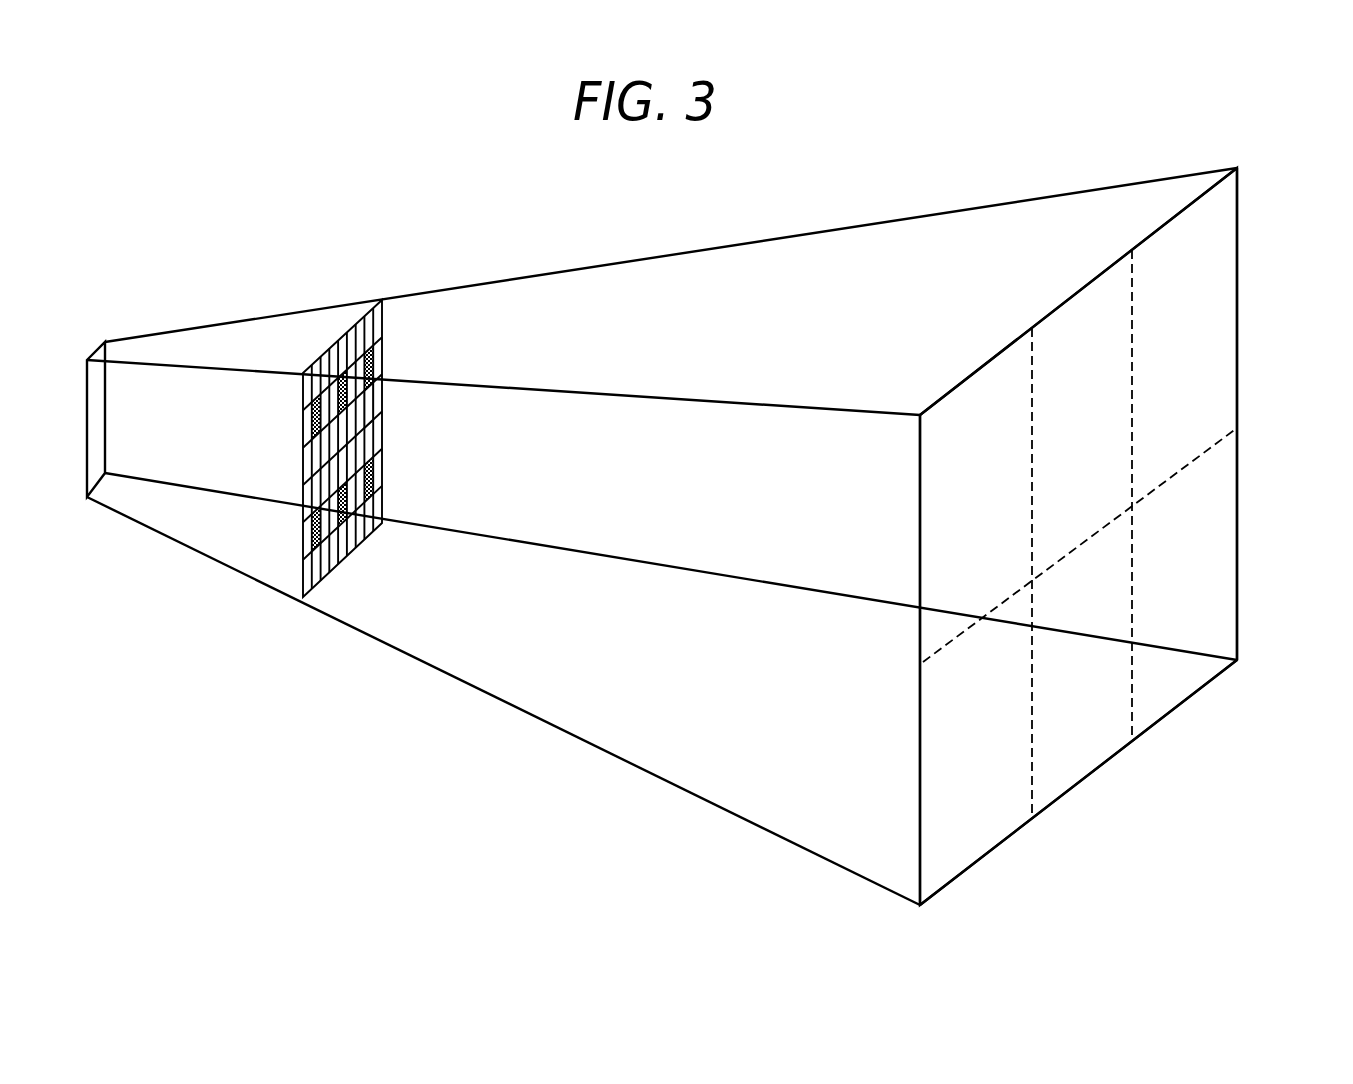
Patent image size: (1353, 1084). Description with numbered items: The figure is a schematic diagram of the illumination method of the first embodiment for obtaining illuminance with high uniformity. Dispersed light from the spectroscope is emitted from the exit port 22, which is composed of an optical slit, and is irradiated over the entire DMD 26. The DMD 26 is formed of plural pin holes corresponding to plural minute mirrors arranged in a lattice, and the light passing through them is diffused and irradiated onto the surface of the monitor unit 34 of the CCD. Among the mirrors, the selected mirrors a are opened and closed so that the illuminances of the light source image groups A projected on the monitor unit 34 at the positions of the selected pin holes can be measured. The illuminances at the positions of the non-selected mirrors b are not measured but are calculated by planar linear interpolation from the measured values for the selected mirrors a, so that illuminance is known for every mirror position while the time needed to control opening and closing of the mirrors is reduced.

The exit port 22 is at (98, 382).
The DMD 26 is at (374, 418).
The monitor unit 34 is at (1072, 295).
The light source image groups A is at (1213, 343).
The selected mirrors a is at (375, 370).
The non-selected mirrors b is at (369, 408).